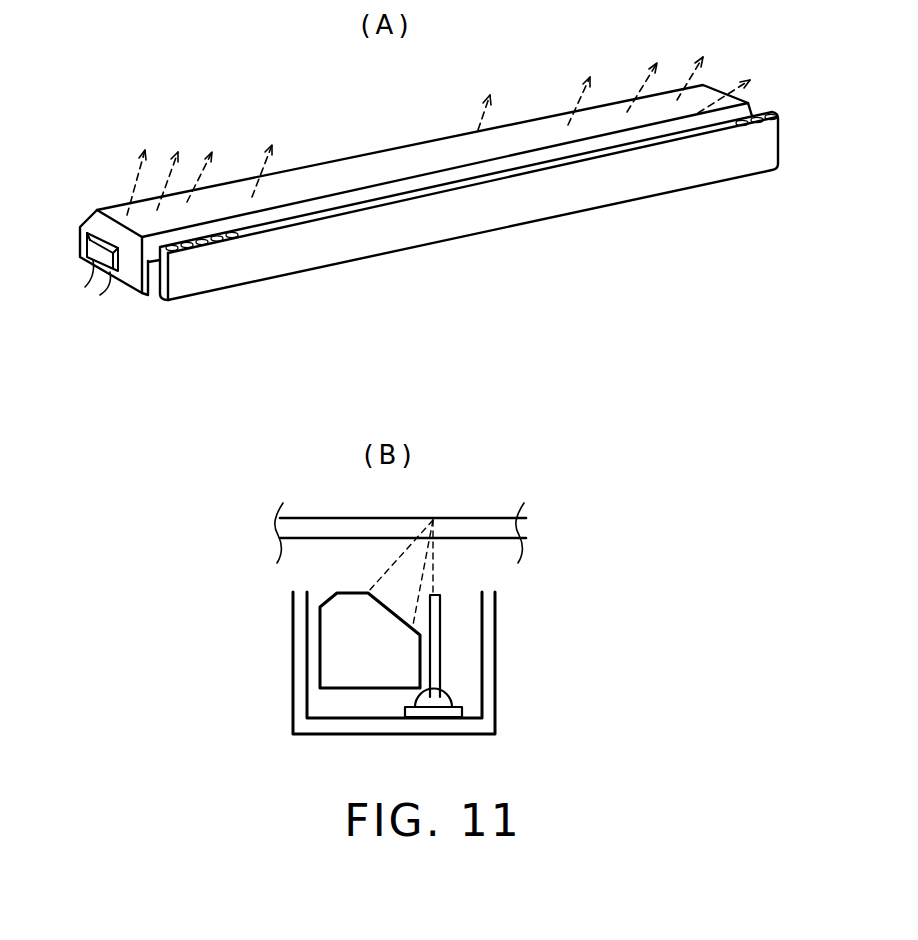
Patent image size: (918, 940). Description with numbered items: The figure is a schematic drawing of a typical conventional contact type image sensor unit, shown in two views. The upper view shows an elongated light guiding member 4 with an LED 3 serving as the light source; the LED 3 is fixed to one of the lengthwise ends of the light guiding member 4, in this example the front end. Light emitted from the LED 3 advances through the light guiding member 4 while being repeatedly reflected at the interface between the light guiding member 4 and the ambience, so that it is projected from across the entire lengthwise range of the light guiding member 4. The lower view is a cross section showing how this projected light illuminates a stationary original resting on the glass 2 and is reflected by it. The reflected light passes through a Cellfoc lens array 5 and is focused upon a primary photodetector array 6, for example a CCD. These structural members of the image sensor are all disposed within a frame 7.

The glass 2 is at (473, 518).
The LED 3 is at (87, 252).
The light guiding member 4 is at (407, 147).
The Cellfoc lens array 5 is at (240, 268).
The primary photodetector array 6 is at (452, 707).
The frame 7 is at (292, 675).